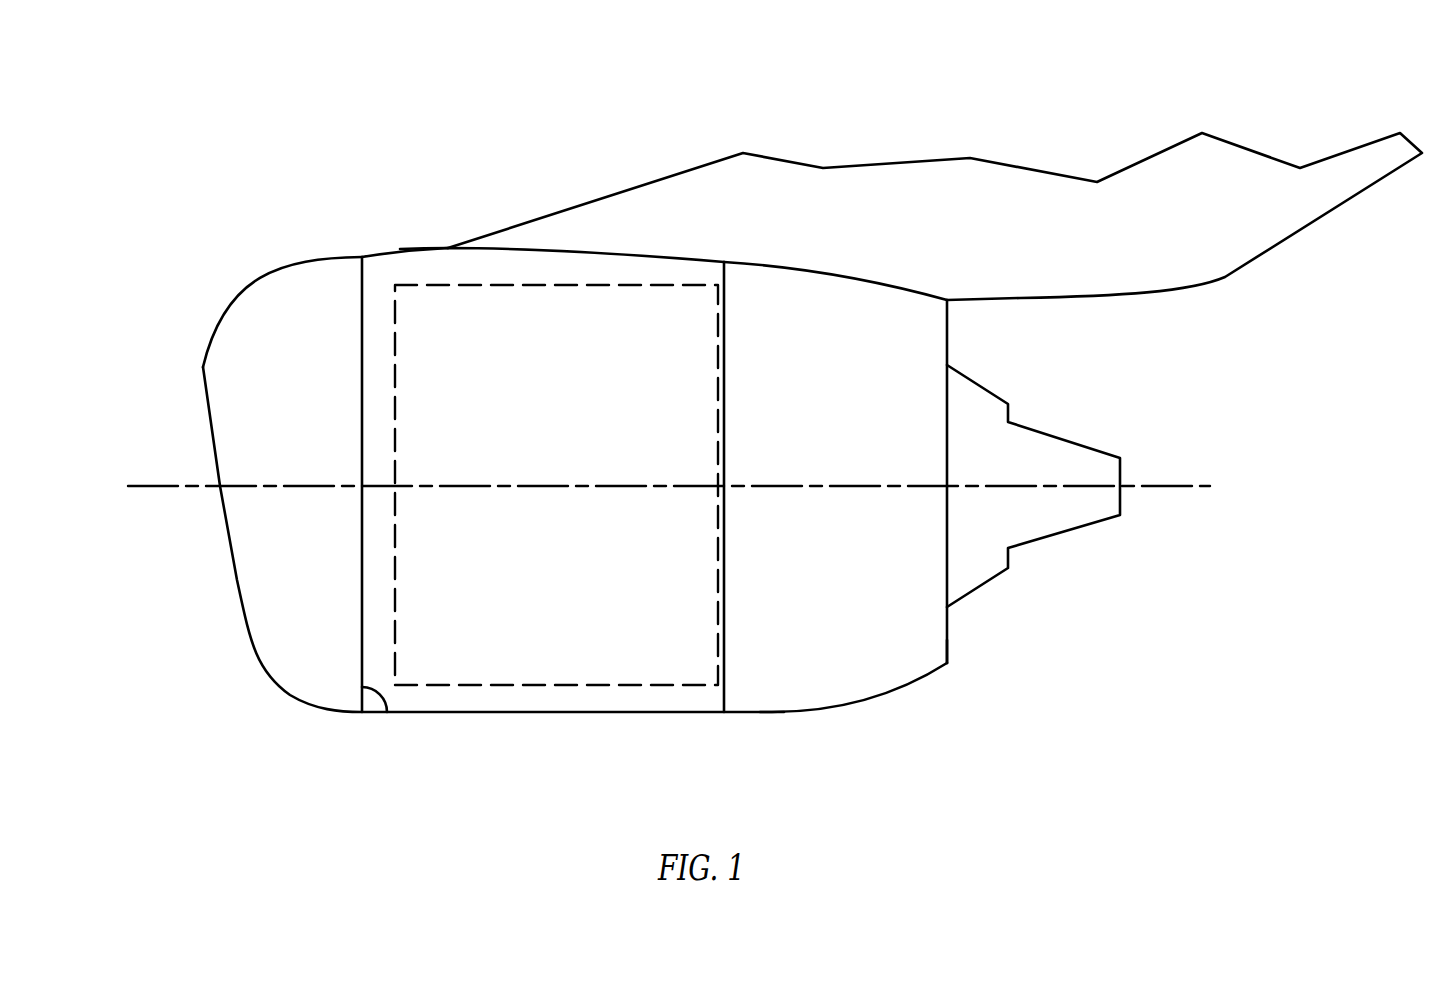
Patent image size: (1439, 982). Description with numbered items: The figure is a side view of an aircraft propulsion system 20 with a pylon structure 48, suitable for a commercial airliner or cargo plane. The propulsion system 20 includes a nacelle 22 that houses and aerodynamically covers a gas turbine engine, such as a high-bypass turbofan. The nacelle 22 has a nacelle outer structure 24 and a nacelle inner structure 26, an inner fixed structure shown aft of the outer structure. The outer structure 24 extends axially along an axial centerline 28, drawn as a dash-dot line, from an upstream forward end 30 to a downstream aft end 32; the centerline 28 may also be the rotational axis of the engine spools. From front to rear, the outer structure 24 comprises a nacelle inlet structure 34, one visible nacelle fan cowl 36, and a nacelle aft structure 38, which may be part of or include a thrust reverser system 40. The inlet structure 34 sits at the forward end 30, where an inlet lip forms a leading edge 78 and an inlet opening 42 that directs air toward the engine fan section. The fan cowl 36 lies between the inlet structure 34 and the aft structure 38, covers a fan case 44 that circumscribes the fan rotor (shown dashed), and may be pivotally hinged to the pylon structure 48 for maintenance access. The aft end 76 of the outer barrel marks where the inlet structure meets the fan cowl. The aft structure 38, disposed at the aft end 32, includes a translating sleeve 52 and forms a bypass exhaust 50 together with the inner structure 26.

The aircraft propulsion system 20 is at (199, 118).
The nacelle 22 is at (480, 213).
The nacelle outer structure 24 is at (416, 237).
The nacelle inner structure 26 is at (996, 599).
The axial centerline 28 is at (146, 487).
The forward end 30 is at (218, 484).
The leading edge 78 is at (218, 484).
The aft end 32 is at (996, 496).
The nacelle inlet structure 34 is at (188, 413).
The nacelle fan cowl 36 is at (543, 536).
The nacelle aft structure 38 is at (835, 534).
The thrust reverser system 40 is at (835, 534).
The inlet opening 42 is at (214, 563).
The fan case 44 is at (557, 688).
The pylon structure 48 is at (590, 197).
The bypass exhaust 50 is at (962, 650).
The translating sleeve 52 is at (772, 713).
The aft end of outer barrel 76 is at (390, 715).